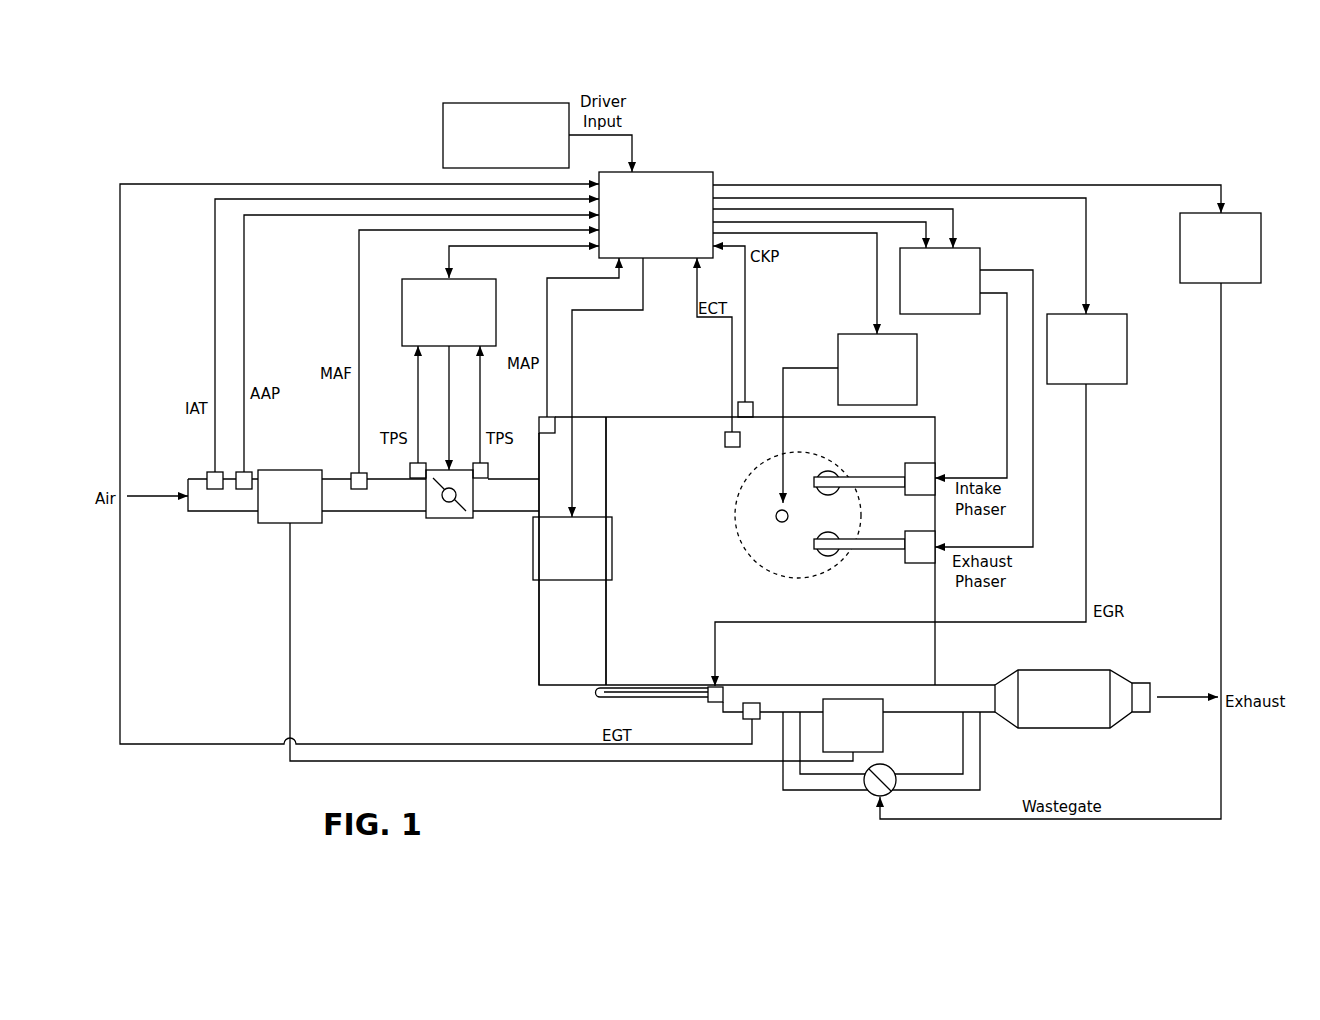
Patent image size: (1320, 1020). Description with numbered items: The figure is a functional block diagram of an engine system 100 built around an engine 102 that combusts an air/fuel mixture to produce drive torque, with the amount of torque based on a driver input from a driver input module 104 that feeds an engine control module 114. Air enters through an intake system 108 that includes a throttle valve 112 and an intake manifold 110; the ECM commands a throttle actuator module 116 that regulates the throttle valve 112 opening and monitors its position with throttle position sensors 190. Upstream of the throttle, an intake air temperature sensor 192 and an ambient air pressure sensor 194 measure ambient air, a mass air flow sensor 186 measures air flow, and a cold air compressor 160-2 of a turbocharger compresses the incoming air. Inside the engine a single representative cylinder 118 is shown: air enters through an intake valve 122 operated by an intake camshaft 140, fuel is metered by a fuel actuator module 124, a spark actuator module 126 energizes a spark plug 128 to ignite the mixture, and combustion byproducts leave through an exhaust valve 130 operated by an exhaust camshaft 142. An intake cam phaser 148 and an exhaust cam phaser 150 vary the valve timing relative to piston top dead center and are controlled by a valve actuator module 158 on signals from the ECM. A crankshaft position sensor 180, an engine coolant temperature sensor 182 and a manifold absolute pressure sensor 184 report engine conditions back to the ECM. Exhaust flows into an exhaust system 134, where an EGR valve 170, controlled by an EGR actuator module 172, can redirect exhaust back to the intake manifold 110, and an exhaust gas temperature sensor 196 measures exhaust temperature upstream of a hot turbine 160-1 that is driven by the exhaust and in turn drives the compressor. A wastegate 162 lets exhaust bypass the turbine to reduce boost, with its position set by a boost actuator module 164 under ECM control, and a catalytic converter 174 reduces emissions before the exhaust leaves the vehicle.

The engine system 100 is at (165, 81).
The engine 102 is at (935, 428).
The driver input module 104 is at (443, 134).
The intake system 108 is at (415, 627).
The intake manifold 110 is at (539, 636).
The throttle valve 112 is at (445, 518).
The engine control module 114 is at (713, 176).
The throttle actuator module 116 is at (421, 279).
The cylinder 118 is at (760, 574).
The intake valve 122 is at (830, 471).
The fuel actuator module 124 is at (585, 580).
The spark actuator module 126 is at (917, 368).
The spark plug 128 is at (777, 518).
The exhaust valve 130 is at (830, 556).
The exhaust system 134 is at (688, 792).
The intake camshaft 140 is at (880, 477).
The exhaust camshaft 142 is at (880, 549).
The intake cam phaser 148 is at (917, 463).
The exhaust cam phaser 150 is at (920, 563).
The valve actuator module 158 is at (980, 258).
The hot turbine 160-1 is at (883, 735).
The cold air compressor 160-2 is at (275, 523).
The wastegate 162 is at (867, 795).
The boost actuator module 164 is at (1240, 283).
The EGR valve 170 is at (715, 702).
The EGR actuator module 172 is at (1105, 384).
The catalytic converter 174 is at (1062, 670).
The crankshaft position sensor 180 is at (748, 400).
The engine coolant temperature sensor 182 is at (733, 447).
The manifold absolute pressure sensor 184 is at (539, 418).
The mass air flow sensor 186 is at (351, 474).
The throttle position sensor 190 is at (418, 478).
The intake air temperature sensor 192 is at (207, 473).
The ambient air pressure sensor 194 is at (250, 472).
The exhaust gas temperature sensor 196 is at (752, 703).